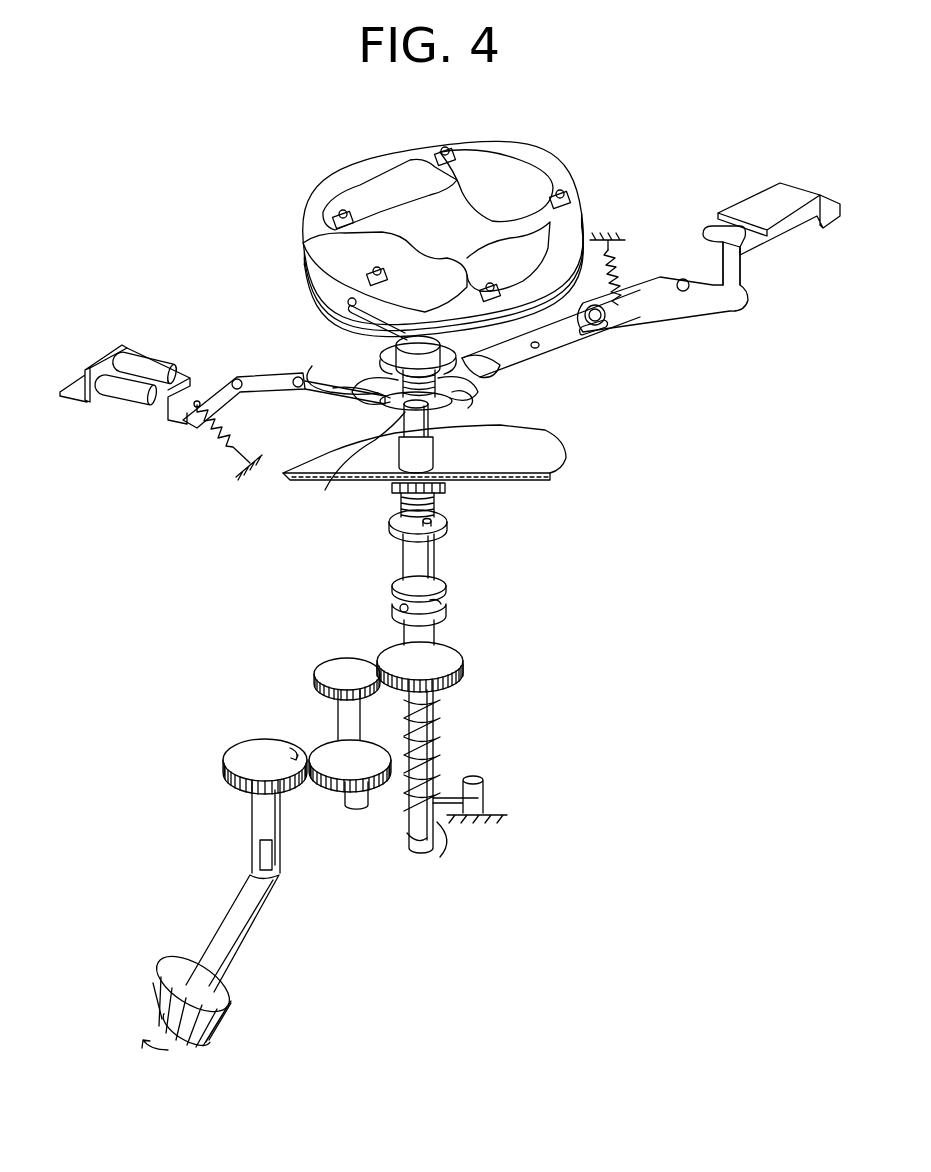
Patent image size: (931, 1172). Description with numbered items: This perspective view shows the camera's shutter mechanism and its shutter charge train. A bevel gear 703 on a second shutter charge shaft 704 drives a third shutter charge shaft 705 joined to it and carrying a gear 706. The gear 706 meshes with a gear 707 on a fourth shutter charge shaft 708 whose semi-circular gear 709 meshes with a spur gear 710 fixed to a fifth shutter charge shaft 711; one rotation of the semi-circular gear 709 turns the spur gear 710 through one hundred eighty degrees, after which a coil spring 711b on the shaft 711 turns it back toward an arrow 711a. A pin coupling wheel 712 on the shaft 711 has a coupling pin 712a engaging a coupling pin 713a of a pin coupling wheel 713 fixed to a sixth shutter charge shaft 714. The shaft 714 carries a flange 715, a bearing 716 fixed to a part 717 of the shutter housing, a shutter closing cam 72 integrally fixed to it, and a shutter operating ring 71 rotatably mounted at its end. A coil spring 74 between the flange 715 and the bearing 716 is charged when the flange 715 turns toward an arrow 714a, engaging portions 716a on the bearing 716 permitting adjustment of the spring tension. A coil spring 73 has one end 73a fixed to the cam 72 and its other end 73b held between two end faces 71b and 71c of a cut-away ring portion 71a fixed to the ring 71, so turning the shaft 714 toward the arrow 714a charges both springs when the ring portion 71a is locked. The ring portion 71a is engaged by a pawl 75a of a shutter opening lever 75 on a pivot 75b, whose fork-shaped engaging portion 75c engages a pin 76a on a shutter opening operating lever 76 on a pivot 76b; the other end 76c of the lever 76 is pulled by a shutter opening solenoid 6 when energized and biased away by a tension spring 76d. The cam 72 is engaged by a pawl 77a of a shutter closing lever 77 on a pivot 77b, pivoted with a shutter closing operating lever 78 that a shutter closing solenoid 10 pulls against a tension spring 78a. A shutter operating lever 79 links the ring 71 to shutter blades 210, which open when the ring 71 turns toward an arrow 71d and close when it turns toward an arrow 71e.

The shutter opening solenoid 6 is at (750, 203).
The shutter closing solenoid 10 is at (150, 364).
The shutter operating ring 71 is at (405, 335).
The cut-away ring portion 71a is at (398, 346).
The end face 71b is at (452, 368).
The end face 71c is at (385, 415).
The arrow 71d is at (395, 372).
The arrow 71e is at (430, 342).
The shutter closing cam 72 is at (435, 398).
The coil spring 73 is at (472, 400).
The end of coil spring 73a is at (410, 432).
The end of coil spring 73b is at (388, 398).
The coil spring 74 is at (440, 517).
The shutter opening lever 75 is at (573, 323).
The pawl 75a is at (497, 373).
The pivot 75b is at (536, 341).
The fork-shaped engaging portion 75c is at (594, 338).
The shutter opening operating lever 76 is at (672, 304).
The pin 76a is at (604, 323).
The pivot 76b is at (685, 278).
The end of operating lever 76c is at (742, 279).
The tension spring 76d is at (616, 275).
The shutter closing lever 77 is at (300, 393).
The pawl 77a is at (357, 464).
The pivot 77b is at (330, 364).
The shutter closing operating lever 78 is at (250, 377).
The tension spring 78a is at (206, 441).
The shutter operating lever 79 is at (396, 278).
The shutter blades 210 is at (481, 153).
The bevel gear 703 is at (150, 998).
The second shutter charge shaft 704 is at (246, 925).
The third shutter charge shaft 705 is at (283, 826).
The gear 706 is at (250, 748).
The gear 707 is at (330, 740).
The fourth shutter charge shaft 708 is at (363, 787).
The semi-circular gear 709 is at (318, 664).
The spur gear 710 is at (452, 692).
The fifth shutter charge shaft 711 is at (462, 670).
The arrow 711a is at (432, 842).
The coil spring 711b is at (442, 740).
The pin coupling wheel 712 is at (446, 624).
The coupling pin 712a is at (403, 610).
The pin coupling wheel 713 is at (395, 586).
The coupling pin 713a is at (442, 606).
The sixth shutter charge shaft 714 is at (440, 442).
The arrow 714a is at (464, 598).
The flange 715 is at (442, 535).
The bearing 716 is at (400, 510).
The engaging portions 716a is at (445, 490).
The part of shutter housing 717 is at (566, 458).